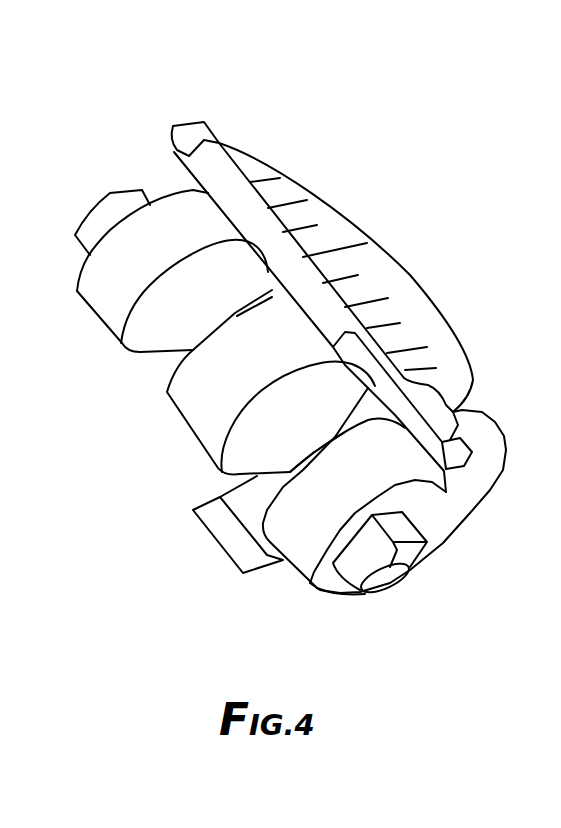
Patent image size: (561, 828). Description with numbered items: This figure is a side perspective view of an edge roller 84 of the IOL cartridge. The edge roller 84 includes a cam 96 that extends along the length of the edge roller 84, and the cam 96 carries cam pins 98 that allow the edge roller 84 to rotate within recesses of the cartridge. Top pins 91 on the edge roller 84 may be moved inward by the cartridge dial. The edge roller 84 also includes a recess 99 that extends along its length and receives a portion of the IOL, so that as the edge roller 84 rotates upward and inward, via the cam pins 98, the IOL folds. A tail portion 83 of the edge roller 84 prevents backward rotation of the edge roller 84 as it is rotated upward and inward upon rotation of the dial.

The tail portion 83 is at (238, 547).
The edge roller 84 is at (267, 136).
The top pins 91 is at (192, 125).
The cam 96 is at (179, 434).
The cam pins 98 is at (110, 210).
The recess 99 is at (393, 459).